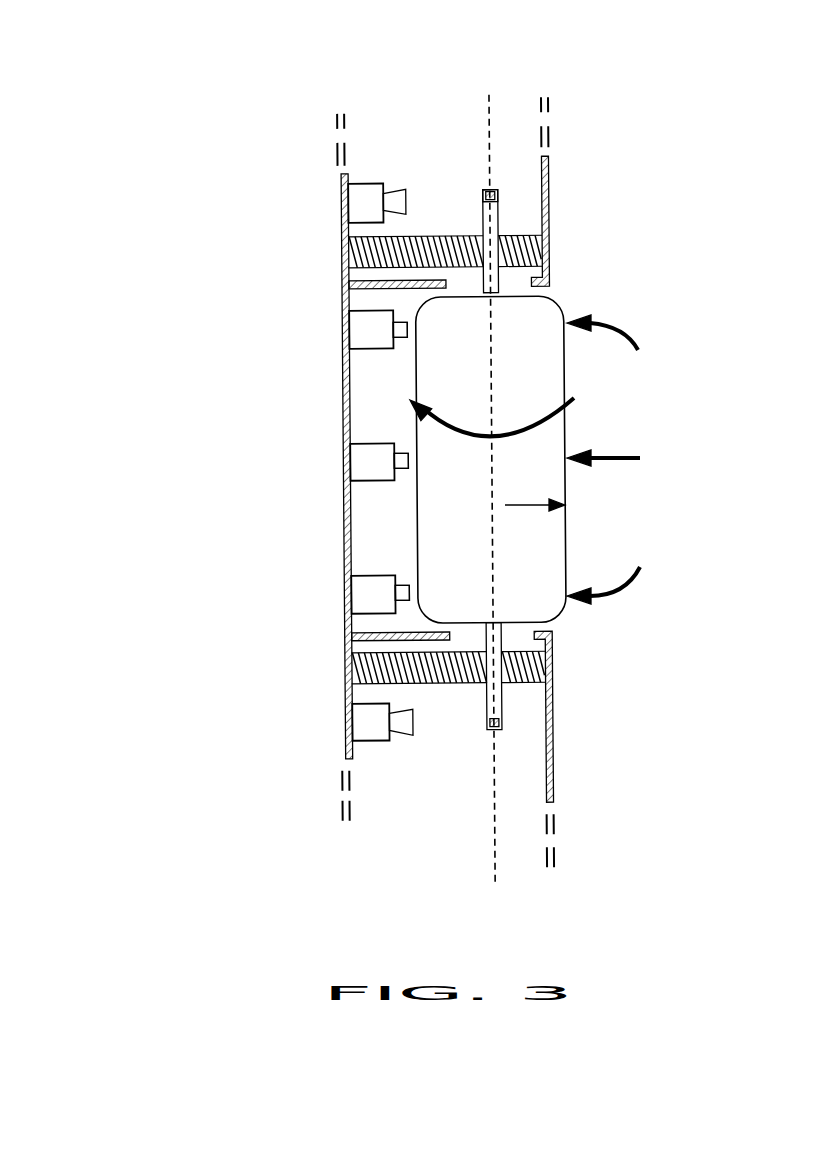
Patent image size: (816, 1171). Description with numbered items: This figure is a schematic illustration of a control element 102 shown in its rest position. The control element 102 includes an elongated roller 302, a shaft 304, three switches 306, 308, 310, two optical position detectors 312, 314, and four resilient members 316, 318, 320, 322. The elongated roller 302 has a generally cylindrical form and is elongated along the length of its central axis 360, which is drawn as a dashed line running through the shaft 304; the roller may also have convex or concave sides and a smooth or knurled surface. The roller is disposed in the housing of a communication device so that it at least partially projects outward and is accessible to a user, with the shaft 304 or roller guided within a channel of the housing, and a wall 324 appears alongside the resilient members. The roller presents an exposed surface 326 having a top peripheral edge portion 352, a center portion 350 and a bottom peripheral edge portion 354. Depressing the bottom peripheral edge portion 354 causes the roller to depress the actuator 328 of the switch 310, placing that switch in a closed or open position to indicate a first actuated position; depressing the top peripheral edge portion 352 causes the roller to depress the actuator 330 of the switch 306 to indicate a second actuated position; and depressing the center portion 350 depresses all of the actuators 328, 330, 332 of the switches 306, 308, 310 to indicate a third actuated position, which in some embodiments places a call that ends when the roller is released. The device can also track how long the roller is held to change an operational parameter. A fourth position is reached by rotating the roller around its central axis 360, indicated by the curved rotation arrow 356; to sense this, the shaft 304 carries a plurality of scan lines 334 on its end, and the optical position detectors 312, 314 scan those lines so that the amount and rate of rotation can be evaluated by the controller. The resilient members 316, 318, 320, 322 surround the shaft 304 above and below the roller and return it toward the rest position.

The control element 102 is at (208, 156).
The elongated roller 302 is at (552, 298).
The shaft 304 is at (487, 732).
The switch 306 is at (380, 329).
The switch 308 is at (373, 463).
The switch 310 is at (374, 598).
The optical position detector 312 is at (342, 201).
The optical position detector 314 is at (346, 720).
The resilient member 316 is at (432, 236).
The resilient member 318 is at (518, 236).
The resilient member 320 is at (438, 684).
The resilient member 322 is at (525, 684).
The housing wall 324 is at (549, 206).
The exposed surface 326 is at (498, 516).
The actuator 328 is at (402, 587).
The actuator 330 is at (400, 321).
The actuator 332 is at (402, 452).
The scan lines 334 is at (485, 190).
The center portion 350 is at (703, 470).
The top peripheral edge portion 352 is at (678, 384).
The bottom peripheral edge portion 354 is at (678, 560).
The drum rotation 356 is at (616, 400).
The central axis 360 is at (491, 96).